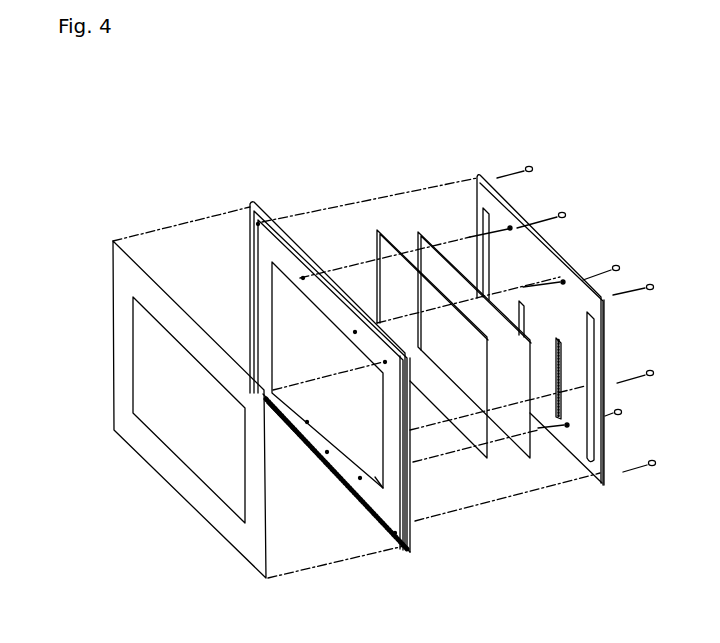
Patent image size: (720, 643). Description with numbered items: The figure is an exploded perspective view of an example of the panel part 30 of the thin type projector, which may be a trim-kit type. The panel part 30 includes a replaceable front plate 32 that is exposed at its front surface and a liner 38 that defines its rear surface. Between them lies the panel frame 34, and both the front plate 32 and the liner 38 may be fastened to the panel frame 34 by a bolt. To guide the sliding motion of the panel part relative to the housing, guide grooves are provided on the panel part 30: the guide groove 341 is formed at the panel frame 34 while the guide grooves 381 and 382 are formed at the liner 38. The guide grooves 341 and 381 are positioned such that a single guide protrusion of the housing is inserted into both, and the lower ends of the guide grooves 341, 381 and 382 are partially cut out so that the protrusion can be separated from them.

The panel part 30 is at (431, 138).
The front plate 32 is at (243, 542).
The panel frame 34 is at (413, 533).
The guide groove 341 is at (250, 263).
The liner 38 is at (552, 252).
The guide groove 381 is at (605, 447).
The guide groove 382 is at (562, 362).